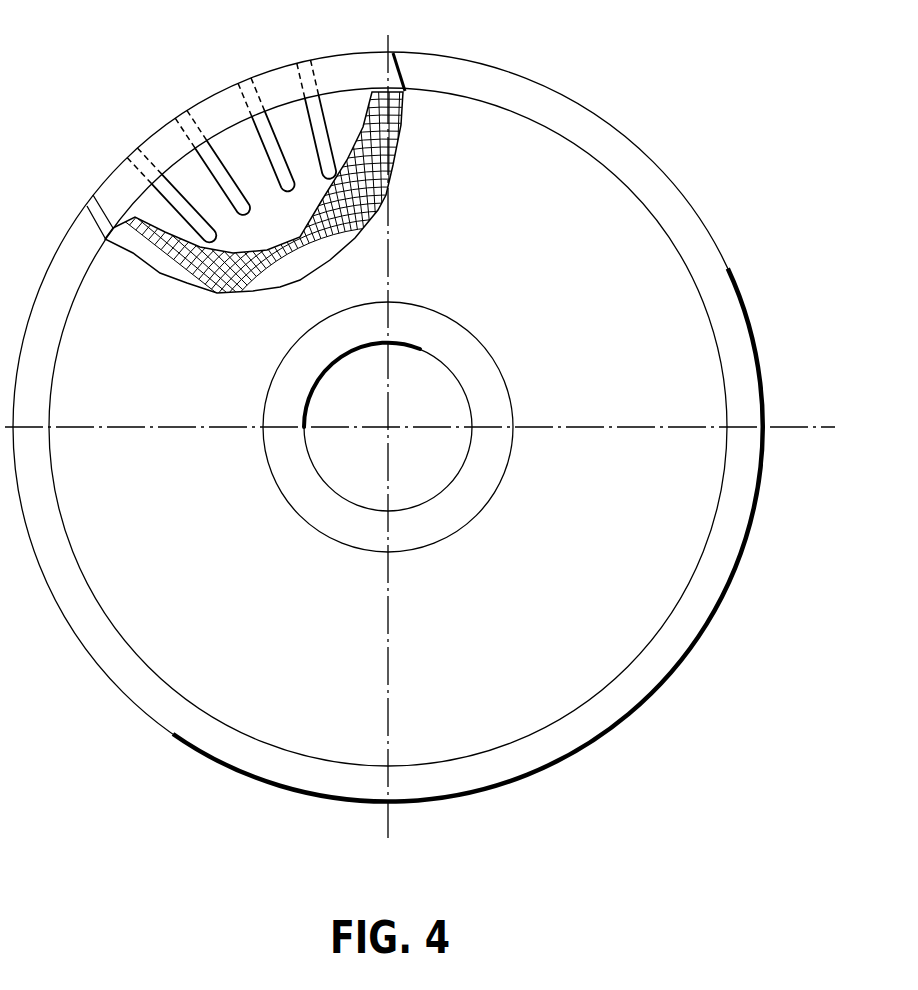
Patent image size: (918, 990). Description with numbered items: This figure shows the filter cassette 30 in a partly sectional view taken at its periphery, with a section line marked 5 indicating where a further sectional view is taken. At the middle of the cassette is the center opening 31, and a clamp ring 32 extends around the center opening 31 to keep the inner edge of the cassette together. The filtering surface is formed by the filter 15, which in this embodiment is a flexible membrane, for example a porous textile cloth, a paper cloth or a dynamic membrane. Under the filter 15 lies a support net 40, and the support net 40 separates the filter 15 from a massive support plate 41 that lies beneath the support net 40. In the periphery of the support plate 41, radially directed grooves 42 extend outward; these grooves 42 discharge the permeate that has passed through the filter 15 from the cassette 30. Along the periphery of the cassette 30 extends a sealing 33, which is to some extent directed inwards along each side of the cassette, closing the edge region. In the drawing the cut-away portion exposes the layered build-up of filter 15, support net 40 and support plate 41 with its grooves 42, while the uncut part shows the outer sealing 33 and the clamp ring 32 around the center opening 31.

The filter cassette 30 is at (637, 130).
The filter 15 is at (540, 147).
The sealing 33 is at (490, 86).
The support net 40 is at (93, 196).
The support plate 41 is at (192, 170).
The radially directed grooves 42 is at (312, 118).
The clamp ring 32 is at (458, 348).
The center opening 31 is at (428, 478).
The section line 5- 5 is at (809, 383).